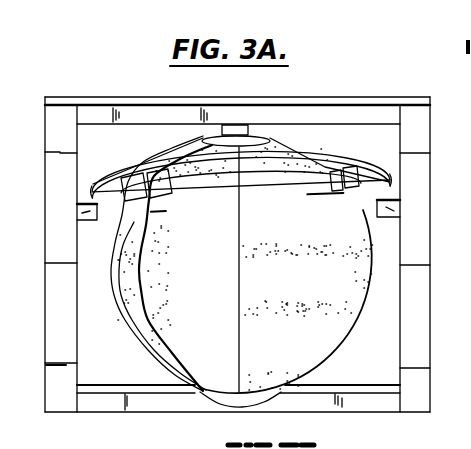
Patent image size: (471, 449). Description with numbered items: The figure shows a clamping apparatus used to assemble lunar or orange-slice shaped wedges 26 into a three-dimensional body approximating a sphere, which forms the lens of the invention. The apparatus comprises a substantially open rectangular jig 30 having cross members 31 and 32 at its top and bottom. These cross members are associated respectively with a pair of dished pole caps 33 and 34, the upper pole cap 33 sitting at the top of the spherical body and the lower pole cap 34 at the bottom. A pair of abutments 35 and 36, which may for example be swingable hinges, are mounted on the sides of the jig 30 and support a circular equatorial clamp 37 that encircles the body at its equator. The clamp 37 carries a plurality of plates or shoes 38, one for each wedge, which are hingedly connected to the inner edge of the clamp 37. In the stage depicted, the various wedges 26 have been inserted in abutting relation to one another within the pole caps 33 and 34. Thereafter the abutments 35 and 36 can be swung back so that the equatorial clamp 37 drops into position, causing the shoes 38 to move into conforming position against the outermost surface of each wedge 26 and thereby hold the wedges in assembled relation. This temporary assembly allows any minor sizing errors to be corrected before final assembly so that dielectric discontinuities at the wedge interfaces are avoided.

The wedge 26 is at (118, 303).
The rectangular jig 30 is at (413, 183).
The cross member 31 is at (307, 108).
The cross member 32 is at (160, 402).
The dished pole cap 33 is at (268, 138).
The dished pole cap 34 is at (235, 406).
The abutment 35 is at (404, 216).
The abutment 36 is at (78, 211).
The circular equatorial clamp 37 is at (313, 207).
The plate or shoe 38 is at (351, 183).